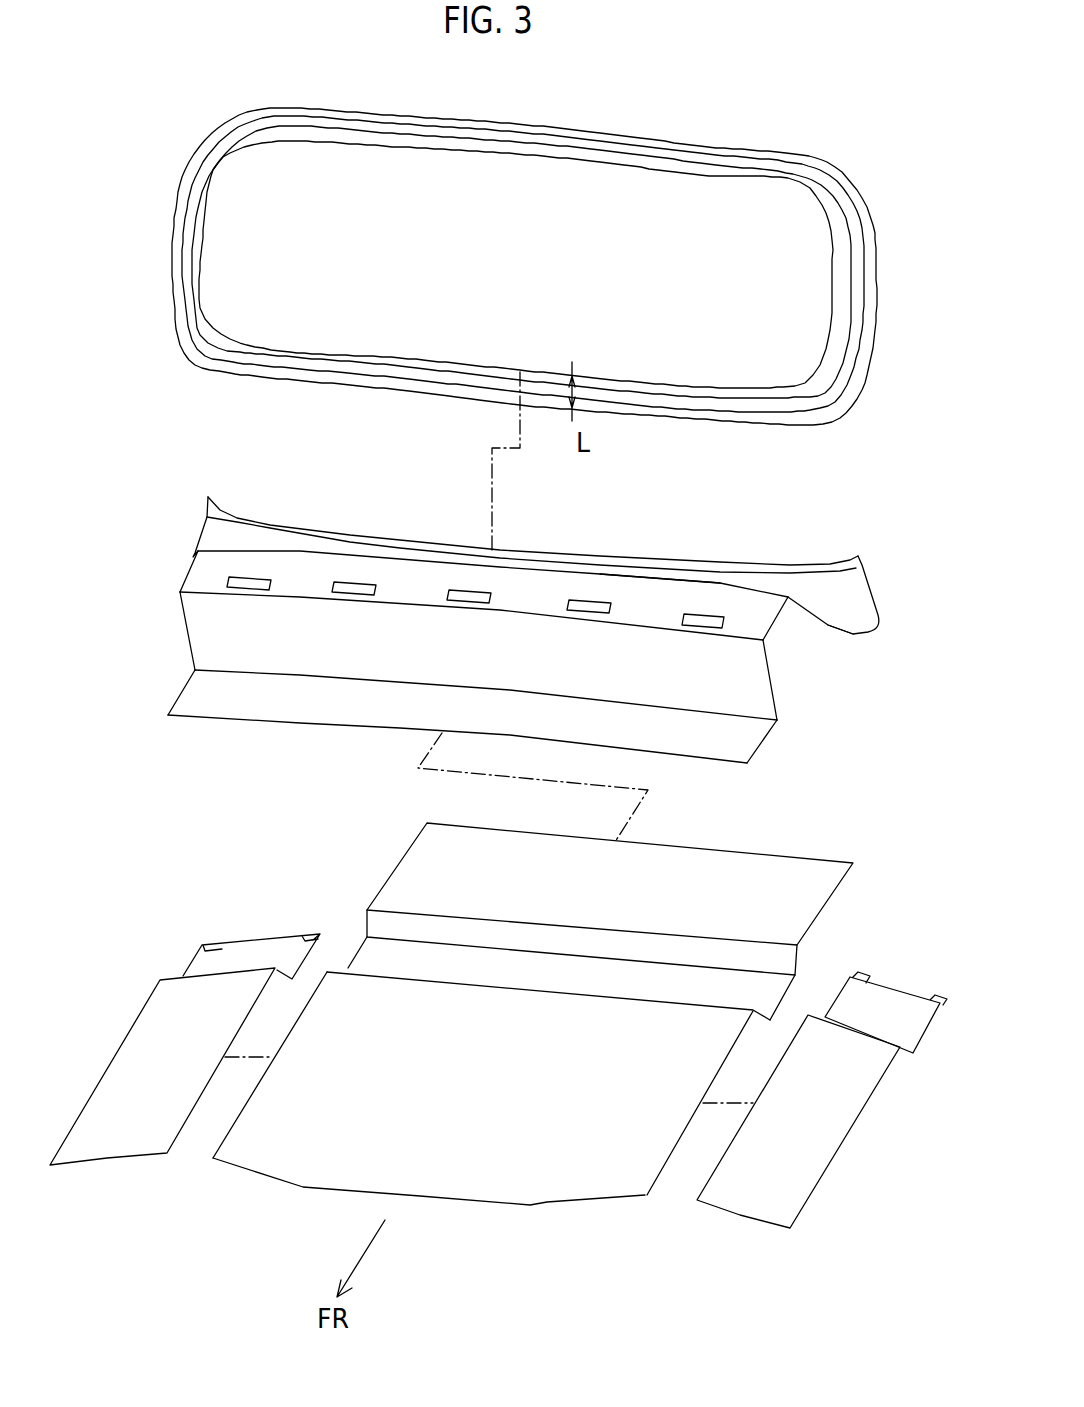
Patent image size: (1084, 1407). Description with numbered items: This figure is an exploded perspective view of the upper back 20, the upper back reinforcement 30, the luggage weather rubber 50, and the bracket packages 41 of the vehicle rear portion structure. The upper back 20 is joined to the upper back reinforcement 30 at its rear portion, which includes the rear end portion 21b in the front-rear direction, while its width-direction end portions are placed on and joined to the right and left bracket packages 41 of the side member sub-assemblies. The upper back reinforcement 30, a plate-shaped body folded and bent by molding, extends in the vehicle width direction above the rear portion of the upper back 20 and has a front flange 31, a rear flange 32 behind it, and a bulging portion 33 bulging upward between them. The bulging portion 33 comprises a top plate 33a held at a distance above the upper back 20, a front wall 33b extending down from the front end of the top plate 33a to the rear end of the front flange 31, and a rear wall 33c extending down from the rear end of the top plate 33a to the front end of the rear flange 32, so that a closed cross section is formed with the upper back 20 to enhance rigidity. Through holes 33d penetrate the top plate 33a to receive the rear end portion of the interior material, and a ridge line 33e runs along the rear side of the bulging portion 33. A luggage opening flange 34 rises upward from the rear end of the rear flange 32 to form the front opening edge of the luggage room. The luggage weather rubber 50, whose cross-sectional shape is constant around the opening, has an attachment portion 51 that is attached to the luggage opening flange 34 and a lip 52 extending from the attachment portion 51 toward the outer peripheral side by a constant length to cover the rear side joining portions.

The upper back 20 is at (546, 1045).
The rear end portion 21b is at (798, 863).
The upper back reinforcement 30 is at (515, 633).
The front flange 31 is at (198, 693).
The rear flange 32 is at (525, 585).
The bulging portion 33 is at (497, 620).
The top plate 33a is at (767, 615).
The front wall 33b is at (770, 681).
The rear wall 33c is at (830, 626).
The through hole 33d is at (418, 636).
The ridge line 33e is at (688, 580).
The luggage opening flange 34 is at (238, 520).
The bracket package 41 is at (130, 1142).
The luggage weather rubber 50 is at (524, 249).
The attachment portion 51 is at (718, 389).
The lip 52 is at (645, 408).